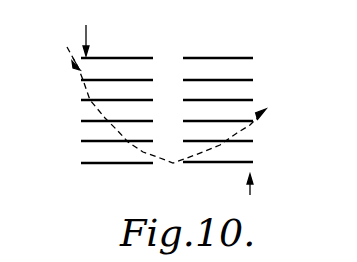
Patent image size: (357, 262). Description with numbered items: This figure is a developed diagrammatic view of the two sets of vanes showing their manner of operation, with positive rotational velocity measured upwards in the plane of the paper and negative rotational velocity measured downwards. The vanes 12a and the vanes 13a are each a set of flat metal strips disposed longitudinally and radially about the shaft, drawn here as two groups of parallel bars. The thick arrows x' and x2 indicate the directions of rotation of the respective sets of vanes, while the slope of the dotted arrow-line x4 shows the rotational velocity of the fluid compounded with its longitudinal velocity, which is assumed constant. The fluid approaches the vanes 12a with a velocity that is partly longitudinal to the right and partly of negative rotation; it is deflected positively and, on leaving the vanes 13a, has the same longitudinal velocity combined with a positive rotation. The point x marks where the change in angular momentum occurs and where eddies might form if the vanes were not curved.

The vanes 12a is at (122, 57).
The vanes 13a is at (200, 57).
The point of change in angular momentum x is at (166, 124).
The thick arrow x' is at (86, 30).
The thick arrow x2 is at (260, 186).
The dotted arrow-line x4 is at (62, 72).